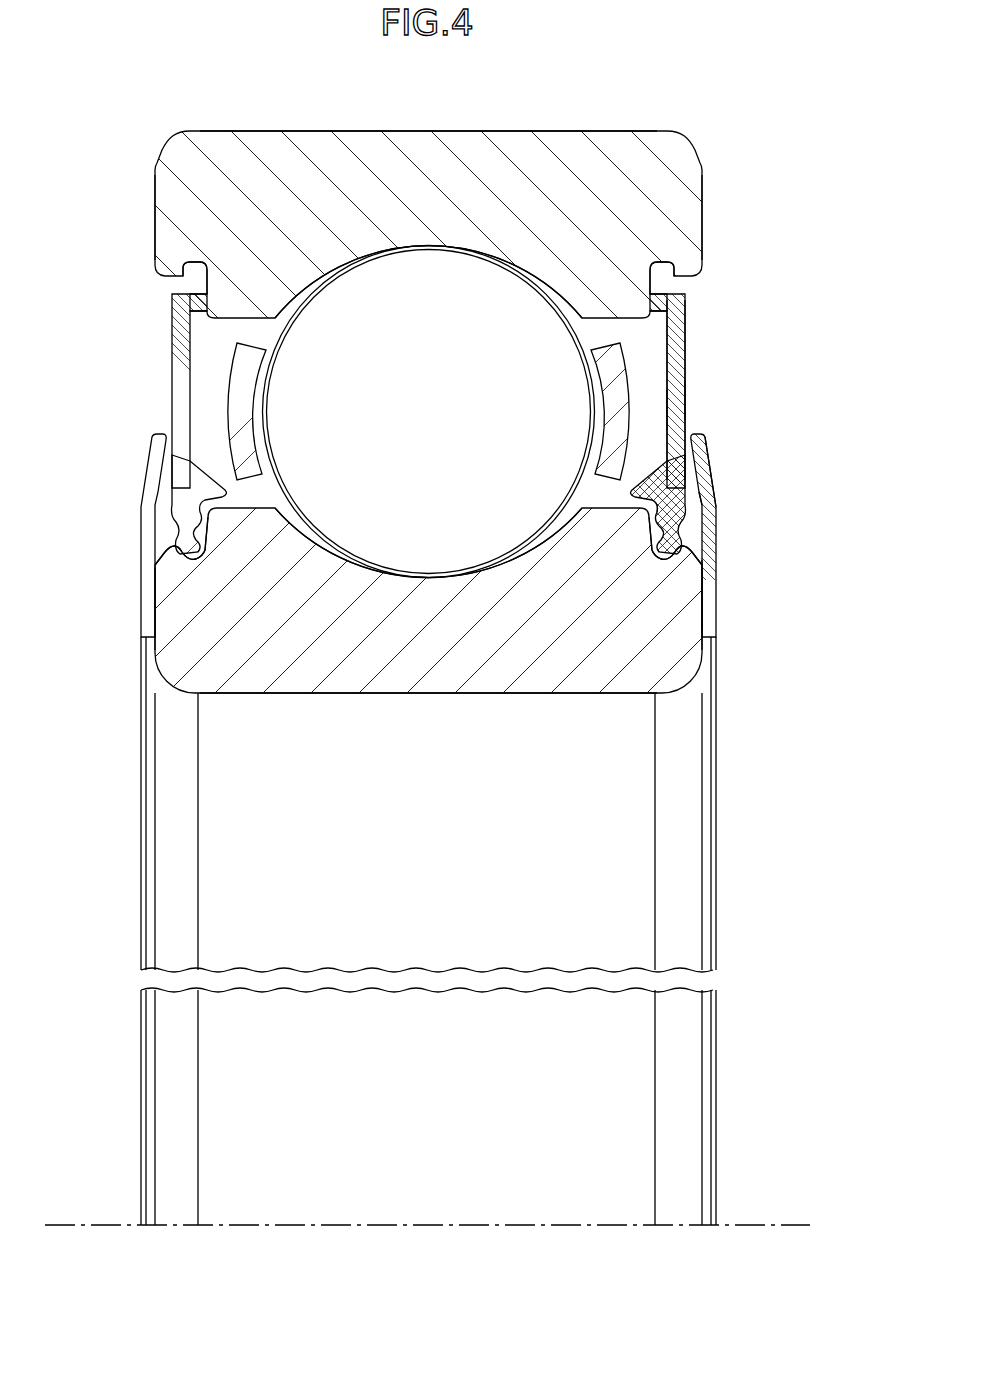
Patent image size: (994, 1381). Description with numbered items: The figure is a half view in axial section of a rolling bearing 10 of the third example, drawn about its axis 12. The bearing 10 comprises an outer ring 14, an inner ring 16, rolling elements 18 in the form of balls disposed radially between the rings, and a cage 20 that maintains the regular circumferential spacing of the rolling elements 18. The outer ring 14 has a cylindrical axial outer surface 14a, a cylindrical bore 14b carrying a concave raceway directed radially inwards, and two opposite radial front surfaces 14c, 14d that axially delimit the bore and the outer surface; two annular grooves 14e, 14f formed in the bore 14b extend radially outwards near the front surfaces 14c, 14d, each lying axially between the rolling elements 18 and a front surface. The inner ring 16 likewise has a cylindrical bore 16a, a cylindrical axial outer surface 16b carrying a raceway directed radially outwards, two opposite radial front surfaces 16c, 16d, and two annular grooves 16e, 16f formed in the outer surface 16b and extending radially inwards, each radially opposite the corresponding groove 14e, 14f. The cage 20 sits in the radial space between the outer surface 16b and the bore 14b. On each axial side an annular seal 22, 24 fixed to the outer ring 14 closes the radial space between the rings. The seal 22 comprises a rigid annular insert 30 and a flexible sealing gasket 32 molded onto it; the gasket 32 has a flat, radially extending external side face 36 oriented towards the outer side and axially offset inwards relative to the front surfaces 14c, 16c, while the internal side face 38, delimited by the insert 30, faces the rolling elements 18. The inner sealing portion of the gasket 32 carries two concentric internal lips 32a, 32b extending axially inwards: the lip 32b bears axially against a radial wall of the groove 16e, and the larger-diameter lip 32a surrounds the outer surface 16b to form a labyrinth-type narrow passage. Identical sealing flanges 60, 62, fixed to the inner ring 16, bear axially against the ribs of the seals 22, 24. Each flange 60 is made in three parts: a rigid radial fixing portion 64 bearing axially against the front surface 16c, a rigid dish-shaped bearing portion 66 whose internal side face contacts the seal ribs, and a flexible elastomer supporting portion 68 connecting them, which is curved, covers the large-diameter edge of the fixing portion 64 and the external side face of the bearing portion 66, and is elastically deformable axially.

The rolling bearing 10 is at (680, 103).
The axis 12 is at (62, 1224).
The outer ring 14 is at (428, 124).
The cylindrical axial outer surface 14a is at (333, 130).
The cylindrical bore 14b is at (592, 338).
The radial front surface 14c is at (703, 217).
The radial front surface 14d is at (155, 217).
The annular groove 14e is at (692, 284).
The annular groove 14f is at (165, 284).
The inner ring 16 is at (428, 701).
The cylindrical bore 16a is at (333, 695).
The cylindrical axial outer surface 16b is at (592, 487).
The radial front surface 16c is at (703, 609).
The radial front surface 16d is at (155, 609).
The annular groove 16e is at (690, 547).
The annular groove 16f is at (168, 547).
The rolling elements 18 is at (418, 424).
The cage 20 is at (602, 424).
The annular seal 22 is at (695, 306).
The annular seal 24 is at (162, 306).
The rigid annular insert 30 is at (672, 373).
The flexible annular sealing gasket 32 is at (693, 380).
The first internal lip 32a is at (647, 493).
The second internal lip 32b is at (646, 515).
The external side face 36 is at (685, 397).
The internal side face 38 is at (668, 402).
The sealing flange 60 is at (724, 517).
The sealing flange 62 is at (133, 517).
The annular fixing portion 64 is at (710, 578).
The bearing portion 66 is at (697, 463).
The supporting portion 68 is at (702, 494).